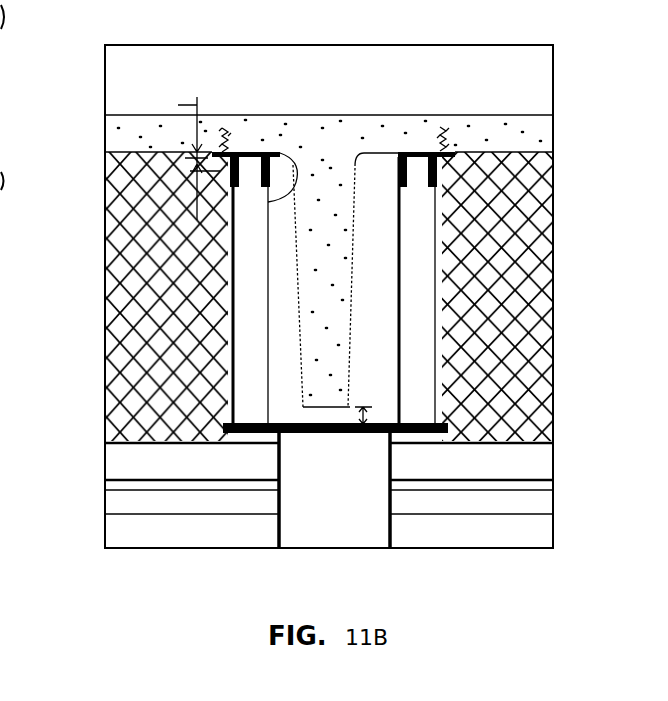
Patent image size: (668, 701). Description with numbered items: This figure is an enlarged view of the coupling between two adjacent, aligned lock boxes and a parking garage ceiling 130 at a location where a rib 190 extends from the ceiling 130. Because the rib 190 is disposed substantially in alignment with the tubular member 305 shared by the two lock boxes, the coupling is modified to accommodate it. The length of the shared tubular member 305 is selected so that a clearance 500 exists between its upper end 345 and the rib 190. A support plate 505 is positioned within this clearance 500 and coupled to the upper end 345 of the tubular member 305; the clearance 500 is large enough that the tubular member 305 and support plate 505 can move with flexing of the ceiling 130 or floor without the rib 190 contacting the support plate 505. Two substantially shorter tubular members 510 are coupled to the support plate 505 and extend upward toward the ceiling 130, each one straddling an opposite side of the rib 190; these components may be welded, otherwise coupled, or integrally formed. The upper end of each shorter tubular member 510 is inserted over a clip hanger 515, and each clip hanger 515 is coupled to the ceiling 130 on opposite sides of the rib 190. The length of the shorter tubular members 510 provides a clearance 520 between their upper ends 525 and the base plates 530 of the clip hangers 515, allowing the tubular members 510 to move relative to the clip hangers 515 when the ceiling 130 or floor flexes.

The ceiling 130 is at (533, 138).
The rib 190 is at (337, 272).
The tubular member 305 is at (395, 532).
The upper end 345 is at (395, 462).
The clearance 500 is at (369, 437).
The support plate 505 is at (303, 436).
The tubular member 510 is at (247, 380).
The clip hanger 515 is at (247, 150).
The clearance 520 is at (174, 154).
The upper end 525 is at (300, 173).
The base plate 530 is at (443, 160).